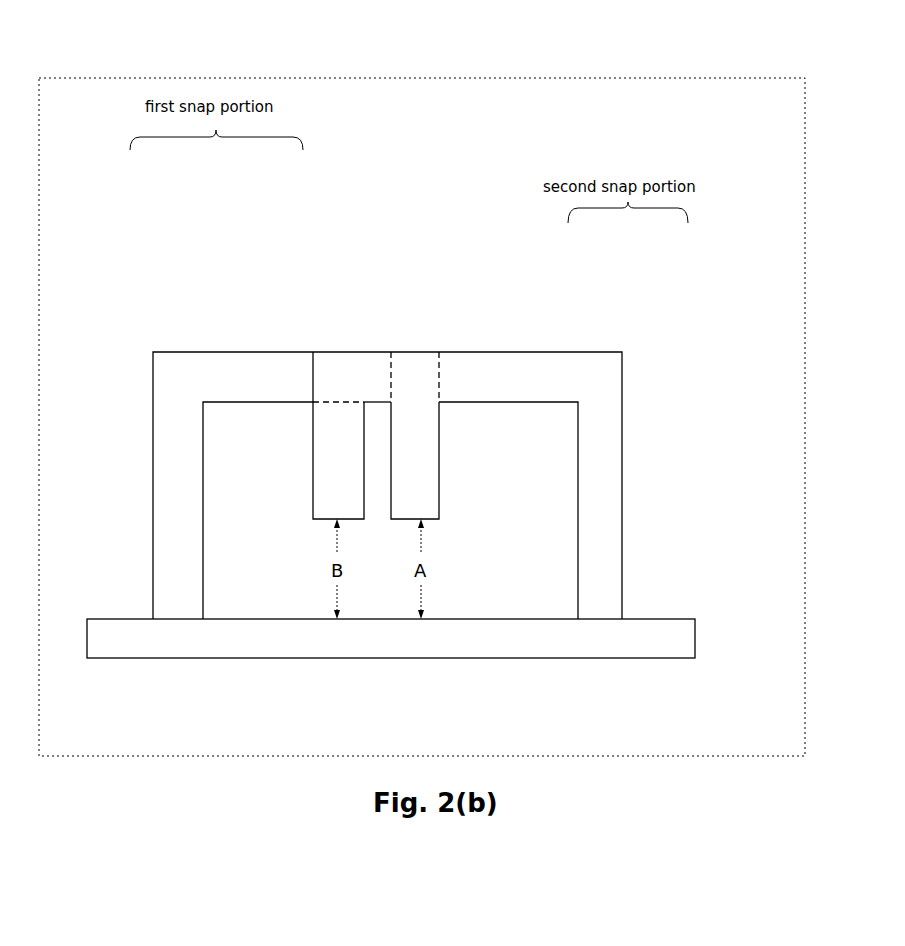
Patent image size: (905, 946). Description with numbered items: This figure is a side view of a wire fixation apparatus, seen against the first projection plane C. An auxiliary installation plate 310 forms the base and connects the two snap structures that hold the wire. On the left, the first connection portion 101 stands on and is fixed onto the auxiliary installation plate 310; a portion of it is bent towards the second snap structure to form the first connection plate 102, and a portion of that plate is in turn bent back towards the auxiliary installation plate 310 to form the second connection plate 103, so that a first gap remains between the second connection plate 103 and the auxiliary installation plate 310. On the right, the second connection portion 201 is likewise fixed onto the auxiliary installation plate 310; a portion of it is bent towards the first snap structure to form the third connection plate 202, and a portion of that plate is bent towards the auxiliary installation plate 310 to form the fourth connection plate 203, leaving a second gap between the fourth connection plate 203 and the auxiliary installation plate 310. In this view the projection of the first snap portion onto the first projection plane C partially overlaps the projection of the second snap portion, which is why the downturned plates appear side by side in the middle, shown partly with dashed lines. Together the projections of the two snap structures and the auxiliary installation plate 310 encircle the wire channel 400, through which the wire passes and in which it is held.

The first connection portion 101 is at (178, 553).
The first connection plate 102 is at (204, 376).
The second connection plate 103 is at (413, 426).
The second connection portion 201 is at (605, 512).
The third connection plate 202 is at (481, 362).
The fourth connection plate 203 is at (344, 503).
The auxiliary installation plate 310 is at (427, 642).
The wire channel 400 is at (505, 519).
The first projection plane C is at (540, 104).